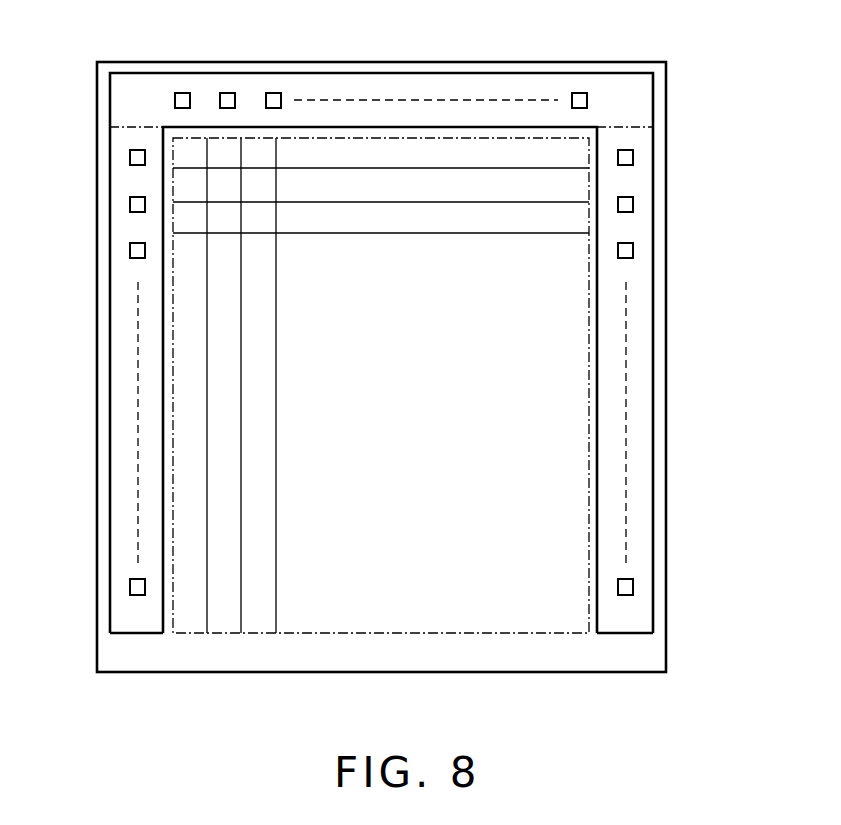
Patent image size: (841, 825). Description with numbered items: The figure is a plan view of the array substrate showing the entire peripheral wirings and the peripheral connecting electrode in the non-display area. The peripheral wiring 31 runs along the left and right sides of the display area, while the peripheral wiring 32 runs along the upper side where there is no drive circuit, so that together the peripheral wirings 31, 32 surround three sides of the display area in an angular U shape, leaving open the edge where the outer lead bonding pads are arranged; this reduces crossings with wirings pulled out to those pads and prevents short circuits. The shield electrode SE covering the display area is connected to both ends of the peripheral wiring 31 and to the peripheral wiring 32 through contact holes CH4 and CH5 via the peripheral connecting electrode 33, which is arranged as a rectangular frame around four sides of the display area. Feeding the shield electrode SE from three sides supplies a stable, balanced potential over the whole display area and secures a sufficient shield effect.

The peripheral wiring 32 is at (536, 88).
The contact hole CH5 is at (228, 100).
The peripheral wiring 31 is at (122, 398).
The contact hole CH4 is at (129, 250).
The shield electrode SE is at (392, 235).
The peripheral connecting electrode 33 is at (155, 655).